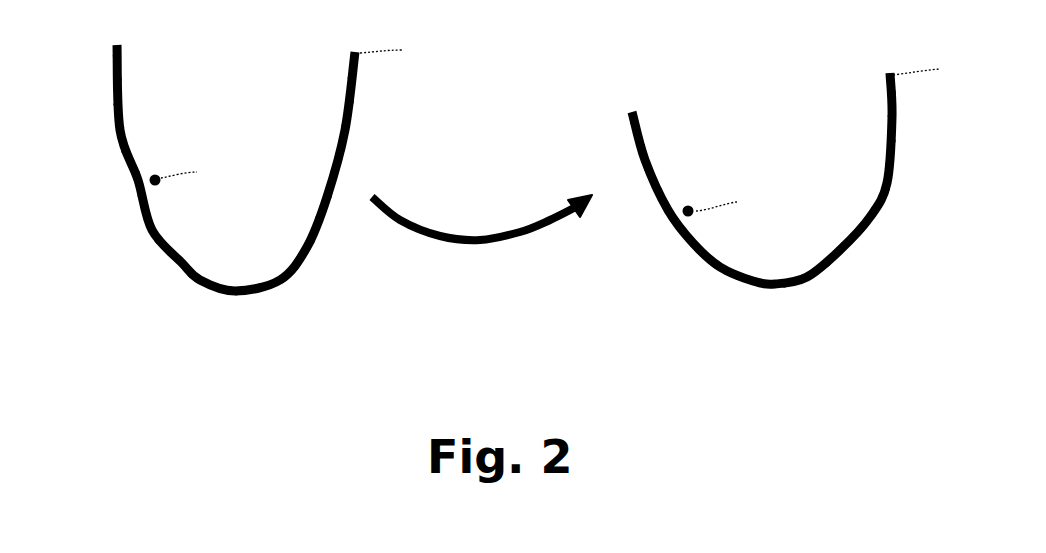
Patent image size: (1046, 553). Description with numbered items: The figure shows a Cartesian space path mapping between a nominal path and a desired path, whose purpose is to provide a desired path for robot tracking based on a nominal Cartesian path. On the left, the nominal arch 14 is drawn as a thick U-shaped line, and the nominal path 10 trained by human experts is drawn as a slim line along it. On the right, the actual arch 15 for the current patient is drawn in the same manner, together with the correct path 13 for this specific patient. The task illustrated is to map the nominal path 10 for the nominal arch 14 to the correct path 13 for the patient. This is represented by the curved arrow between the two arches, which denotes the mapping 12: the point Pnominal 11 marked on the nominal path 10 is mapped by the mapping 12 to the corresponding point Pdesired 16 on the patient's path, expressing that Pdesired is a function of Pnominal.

The nominal path 10 is at (113, 142).
The point Pnominal 11 is at (160, 187).
The mapping 12 is at (433, 223).
The desired path 13 is at (897, 200).
The nominal arch 14 is at (113, 56).
The actual arch 15 is at (897, 125).
The point Pdesired 16 is at (688, 205).